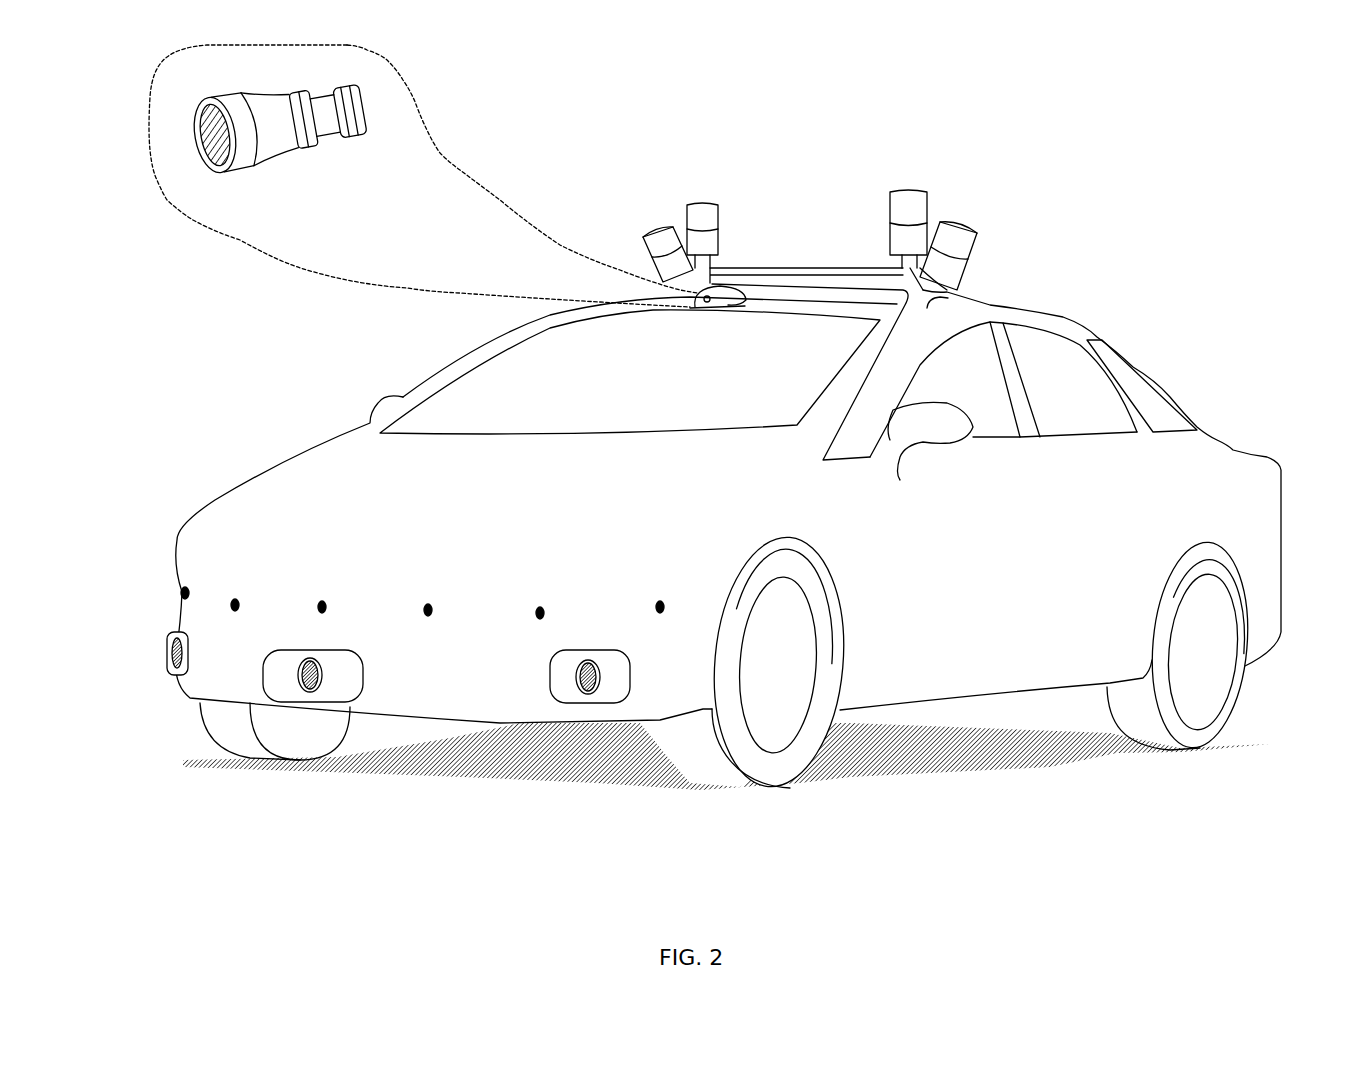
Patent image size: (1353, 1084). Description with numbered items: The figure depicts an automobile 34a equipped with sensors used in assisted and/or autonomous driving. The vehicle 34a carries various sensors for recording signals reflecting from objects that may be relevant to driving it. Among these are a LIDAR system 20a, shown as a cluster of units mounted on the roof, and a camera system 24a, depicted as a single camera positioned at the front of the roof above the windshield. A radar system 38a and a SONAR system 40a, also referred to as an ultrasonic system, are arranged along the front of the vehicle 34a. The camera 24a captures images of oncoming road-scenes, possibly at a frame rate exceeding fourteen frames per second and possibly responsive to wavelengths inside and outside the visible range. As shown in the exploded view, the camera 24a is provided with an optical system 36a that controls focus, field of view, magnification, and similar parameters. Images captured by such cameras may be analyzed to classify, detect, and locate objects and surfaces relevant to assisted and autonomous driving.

The LIDAR system 20a is at (653, 223).
The camera system 24a is at (737, 302).
The automobile 34a is at (1166, 207).
The optical system 36a is at (295, 158).
The radar system 38a is at (158, 663).
The SONAR system 40a is at (193, 582).